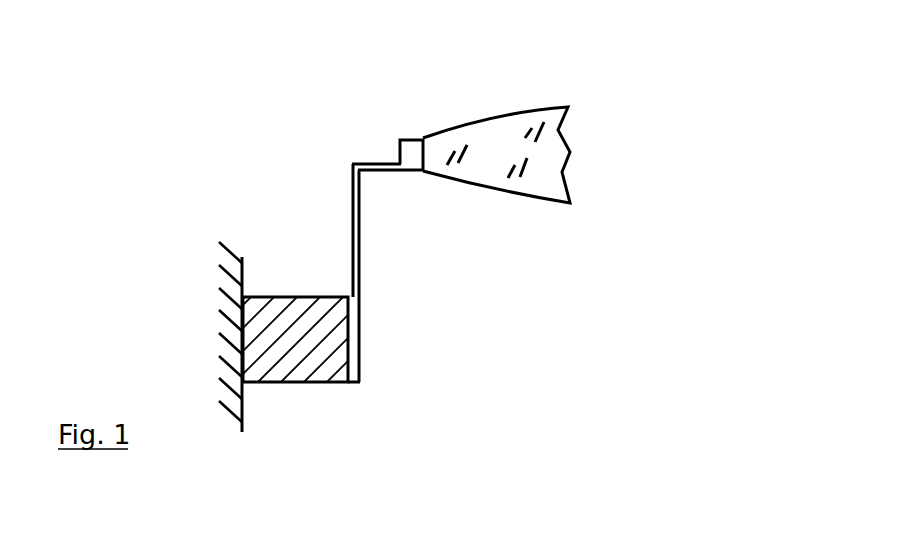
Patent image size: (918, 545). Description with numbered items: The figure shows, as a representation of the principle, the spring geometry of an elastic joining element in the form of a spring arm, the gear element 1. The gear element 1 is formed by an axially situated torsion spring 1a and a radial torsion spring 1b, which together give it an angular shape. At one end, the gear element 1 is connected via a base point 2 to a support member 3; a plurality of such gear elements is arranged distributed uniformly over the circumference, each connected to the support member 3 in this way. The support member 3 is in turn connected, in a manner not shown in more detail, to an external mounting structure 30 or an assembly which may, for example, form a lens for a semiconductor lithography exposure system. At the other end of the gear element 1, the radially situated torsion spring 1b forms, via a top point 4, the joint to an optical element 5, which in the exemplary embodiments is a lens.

The gear element 1 is at (340, 158).
The axially situated torsion spring 1a is at (355, 260).
The radial torsion spring 1b is at (375, 164).
The base point 2 is at (357, 302).
The support member 3 is at (307, 347).
The top point 4 is at (427, 140).
The optical element 5 is at (497, 142).
The external mounting structure 30 is at (232, 336).